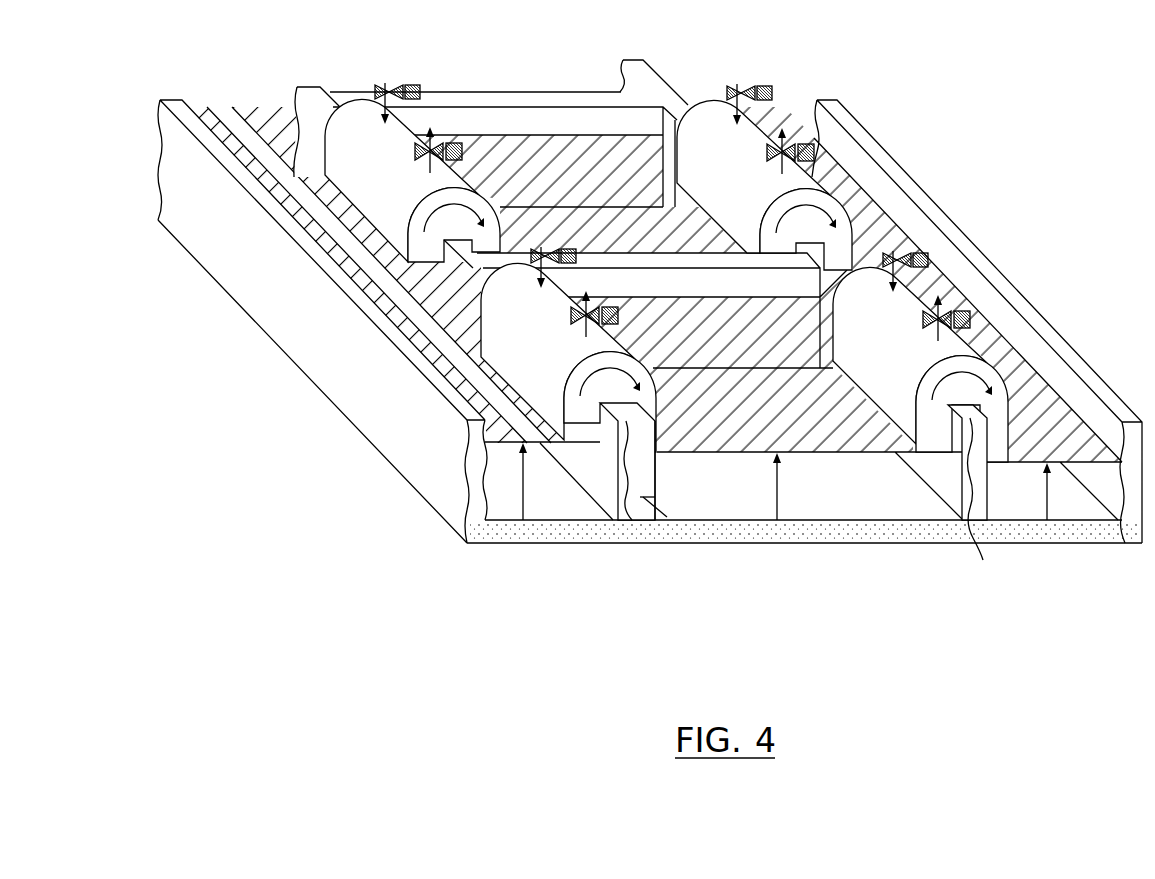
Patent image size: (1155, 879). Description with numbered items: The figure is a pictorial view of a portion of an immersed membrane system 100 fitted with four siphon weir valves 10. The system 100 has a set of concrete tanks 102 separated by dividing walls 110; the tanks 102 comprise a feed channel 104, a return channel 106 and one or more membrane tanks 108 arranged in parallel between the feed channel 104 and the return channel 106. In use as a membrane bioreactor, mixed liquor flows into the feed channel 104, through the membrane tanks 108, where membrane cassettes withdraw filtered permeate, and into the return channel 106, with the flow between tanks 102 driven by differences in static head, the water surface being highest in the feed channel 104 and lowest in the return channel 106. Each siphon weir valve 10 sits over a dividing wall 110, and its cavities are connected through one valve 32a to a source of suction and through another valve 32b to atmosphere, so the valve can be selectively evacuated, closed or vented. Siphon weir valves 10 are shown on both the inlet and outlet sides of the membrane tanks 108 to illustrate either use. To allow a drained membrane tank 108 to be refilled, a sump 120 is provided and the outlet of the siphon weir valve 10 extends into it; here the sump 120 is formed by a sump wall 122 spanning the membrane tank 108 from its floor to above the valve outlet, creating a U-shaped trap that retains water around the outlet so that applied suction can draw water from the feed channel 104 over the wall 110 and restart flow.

The immersed membrane system 100 is at (627, 351).
The siphon weir valve 10 is at (402, 128).
The valve 32a is at (437, 147).
The valve 32b is at (398, 84).
The tank 102 is at (590, 508).
The feed channel 104 is at (507, 500).
The return channel 106 is at (1097, 513).
The membrane tank 108 is at (677, 503).
The dividing wall 110 is at (640, 493).
The sump 120 is at (643, 508).
The sump wall 122 is at (673, 500).